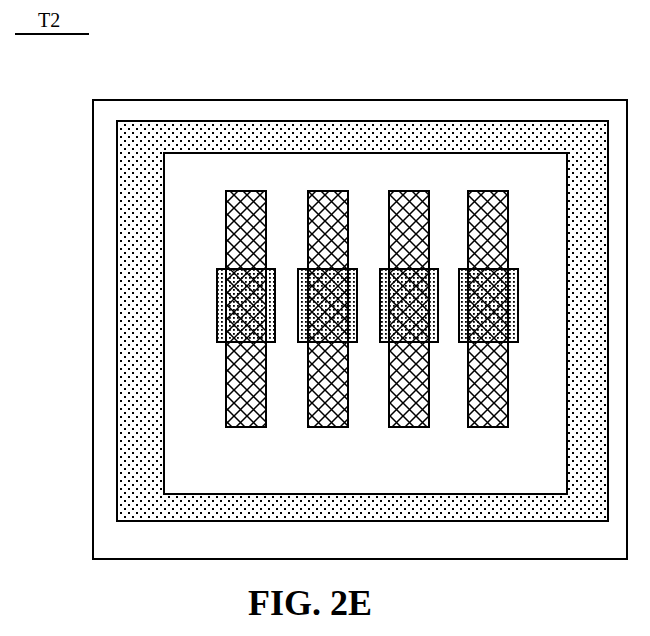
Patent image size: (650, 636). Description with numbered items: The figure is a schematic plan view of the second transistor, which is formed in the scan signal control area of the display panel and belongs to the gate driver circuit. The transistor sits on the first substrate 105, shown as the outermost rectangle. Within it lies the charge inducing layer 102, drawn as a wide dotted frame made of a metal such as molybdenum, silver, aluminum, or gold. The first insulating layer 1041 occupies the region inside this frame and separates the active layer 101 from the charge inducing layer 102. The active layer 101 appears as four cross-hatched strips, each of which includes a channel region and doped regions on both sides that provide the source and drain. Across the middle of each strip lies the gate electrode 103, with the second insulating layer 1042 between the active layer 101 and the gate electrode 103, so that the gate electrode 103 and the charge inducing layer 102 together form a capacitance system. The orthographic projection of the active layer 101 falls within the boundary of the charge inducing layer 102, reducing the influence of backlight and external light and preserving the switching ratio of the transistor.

The active layer 101 is at (237, 206).
The charge inducing layer 102 is at (128, 222).
The gate electrode 103 is at (222, 300).
The second insulating layer 1042 is at (142, 305).
The first insulating layer 1041 is at (180, 376).
The first substrate 105 is at (100, 462).